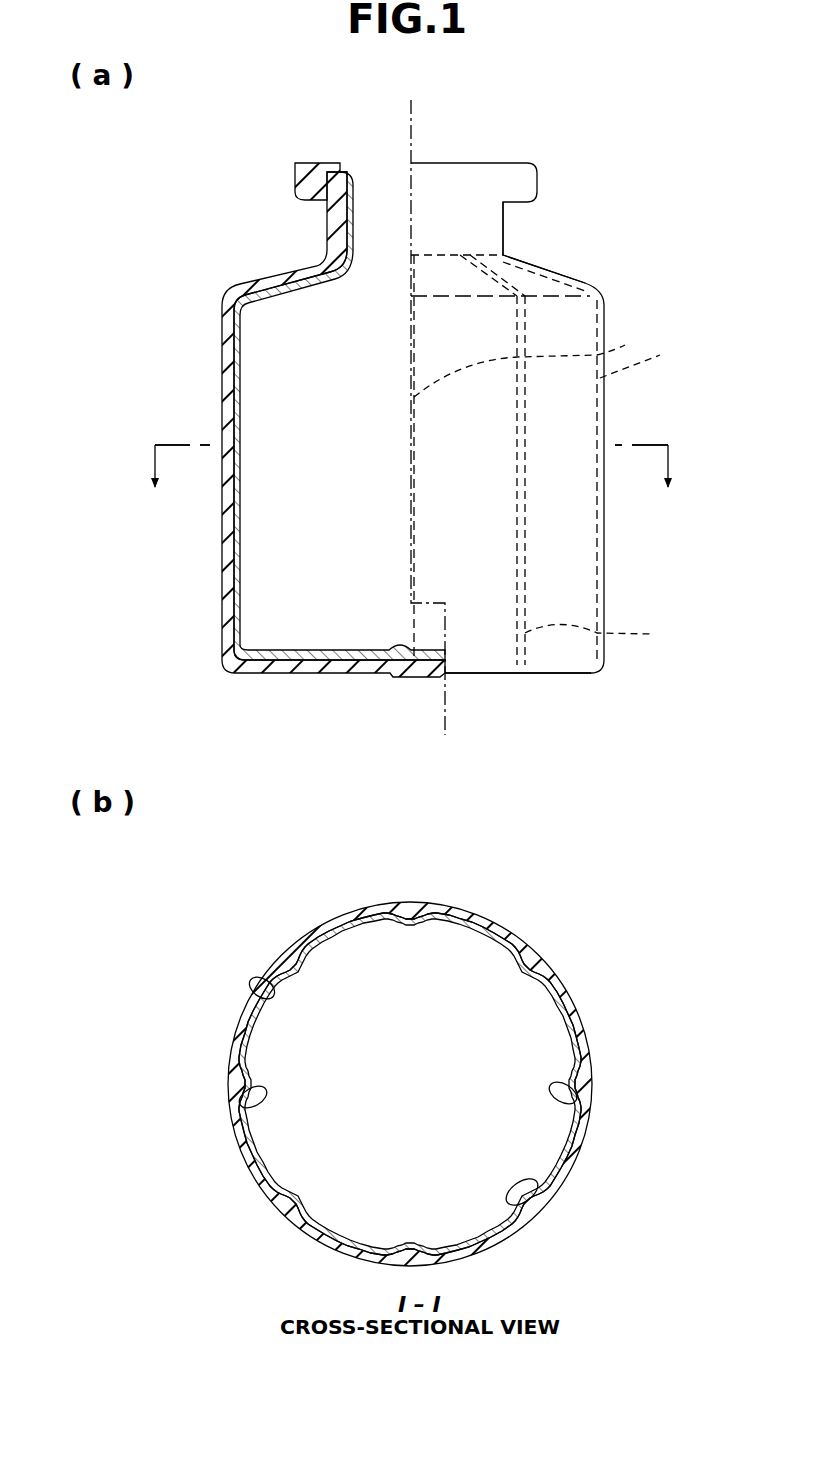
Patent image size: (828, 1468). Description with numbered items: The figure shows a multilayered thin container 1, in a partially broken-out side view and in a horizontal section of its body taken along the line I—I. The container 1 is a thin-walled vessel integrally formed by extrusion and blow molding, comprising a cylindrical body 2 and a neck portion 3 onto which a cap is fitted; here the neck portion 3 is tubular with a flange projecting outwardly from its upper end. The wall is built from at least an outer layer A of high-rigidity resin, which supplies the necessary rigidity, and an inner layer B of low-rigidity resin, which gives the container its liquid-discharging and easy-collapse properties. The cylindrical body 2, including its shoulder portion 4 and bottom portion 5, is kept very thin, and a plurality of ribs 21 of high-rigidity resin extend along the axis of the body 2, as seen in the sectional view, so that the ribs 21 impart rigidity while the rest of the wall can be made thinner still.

The multilayered thin container 1 is at (230, 204).
The cylindrical body 2 is at (585, 540).
The neck portion 3 is at (503, 225).
The shoulder portion 4 is at (560, 268).
The bottom portion 5 is at (481, 675).
The ribs 21 is at (625, 345).
The outer layer A is at (308, 163).
The inner layer B is at (343, 165).